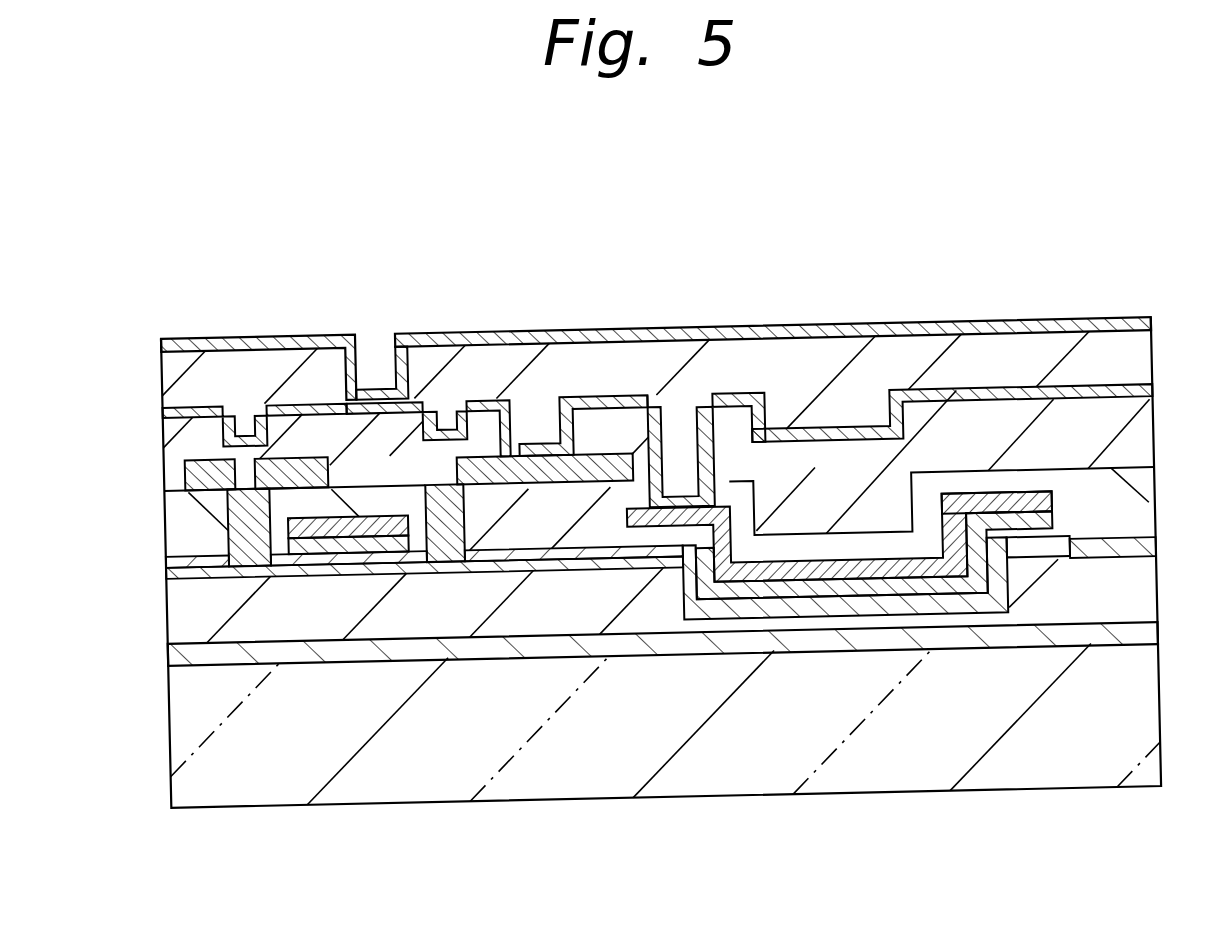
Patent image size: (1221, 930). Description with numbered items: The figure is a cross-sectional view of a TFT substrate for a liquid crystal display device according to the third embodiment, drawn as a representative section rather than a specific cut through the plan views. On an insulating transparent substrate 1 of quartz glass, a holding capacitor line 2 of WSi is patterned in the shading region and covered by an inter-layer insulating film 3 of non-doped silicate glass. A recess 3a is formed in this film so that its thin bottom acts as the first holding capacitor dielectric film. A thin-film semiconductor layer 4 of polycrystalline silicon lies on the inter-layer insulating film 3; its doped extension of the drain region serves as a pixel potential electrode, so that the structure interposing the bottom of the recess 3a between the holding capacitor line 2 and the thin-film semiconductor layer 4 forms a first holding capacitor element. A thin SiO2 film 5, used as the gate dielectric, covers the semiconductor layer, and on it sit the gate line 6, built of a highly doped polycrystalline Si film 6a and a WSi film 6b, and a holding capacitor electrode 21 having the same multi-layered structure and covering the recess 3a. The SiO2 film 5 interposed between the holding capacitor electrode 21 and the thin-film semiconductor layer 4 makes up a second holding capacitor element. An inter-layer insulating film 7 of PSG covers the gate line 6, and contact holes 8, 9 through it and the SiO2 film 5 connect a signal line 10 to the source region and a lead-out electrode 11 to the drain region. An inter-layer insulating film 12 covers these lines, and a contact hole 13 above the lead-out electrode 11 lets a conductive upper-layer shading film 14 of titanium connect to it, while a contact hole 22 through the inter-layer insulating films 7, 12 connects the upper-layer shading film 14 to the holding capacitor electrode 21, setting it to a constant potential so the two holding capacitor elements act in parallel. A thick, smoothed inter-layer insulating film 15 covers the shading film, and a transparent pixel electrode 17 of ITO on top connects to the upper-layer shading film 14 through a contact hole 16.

The insulating transparent substrate 1 is at (1112, 748).
The holding capacitor line 2 is at (1037, 636).
The inter-layer insulating film 3 is at (633, 603).
The recess 3a is at (718, 603).
The thin-film semiconductor layer 4 is at (858, 612).
The SiO2 film 5 is at (297, 562).
The gate line 6 is at (393, 553).
The polycrystalline Si film 6a is at (1048, 530).
The WSi film 6b is at (1050, 503).
The inter-layer insulating film 7 is at (1080, 482).
The contact hole 8 is at (248, 493).
The contact hole 9 is at (459, 410).
The signal line 10 is at (200, 414).
The lead-out electrode 11 is at (590, 400).
The inter-layer insulating film 12 is at (1121, 413).
The contact hole 13 is at (540, 457).
The upper-layer shading film 14 is at (807, 430).
The inter-layer insulating film 15 is at (1011, 347).
The contact hole 16 is at (383, 390).
The pixel electrode 17 is at (310, 337).
The holding capacitor electrode 21 is at (852, 557).
The contact hole 22 is at (663, 437).